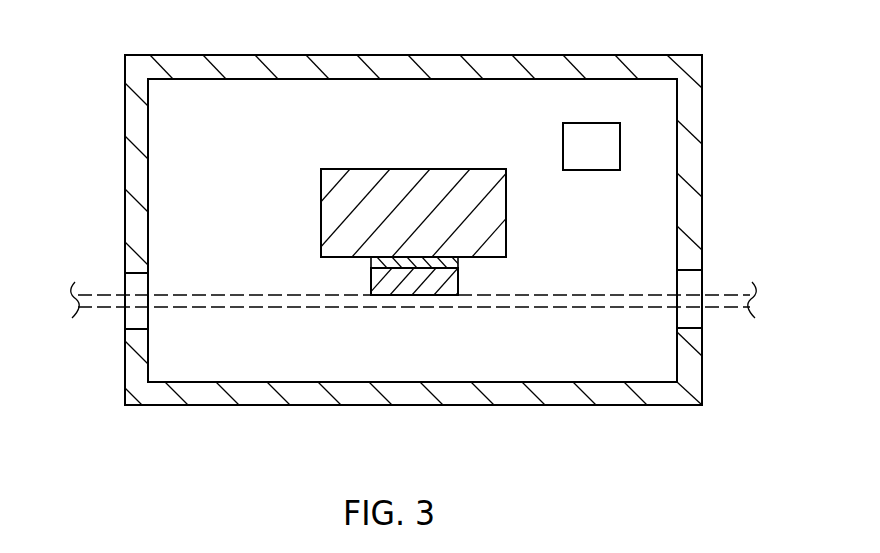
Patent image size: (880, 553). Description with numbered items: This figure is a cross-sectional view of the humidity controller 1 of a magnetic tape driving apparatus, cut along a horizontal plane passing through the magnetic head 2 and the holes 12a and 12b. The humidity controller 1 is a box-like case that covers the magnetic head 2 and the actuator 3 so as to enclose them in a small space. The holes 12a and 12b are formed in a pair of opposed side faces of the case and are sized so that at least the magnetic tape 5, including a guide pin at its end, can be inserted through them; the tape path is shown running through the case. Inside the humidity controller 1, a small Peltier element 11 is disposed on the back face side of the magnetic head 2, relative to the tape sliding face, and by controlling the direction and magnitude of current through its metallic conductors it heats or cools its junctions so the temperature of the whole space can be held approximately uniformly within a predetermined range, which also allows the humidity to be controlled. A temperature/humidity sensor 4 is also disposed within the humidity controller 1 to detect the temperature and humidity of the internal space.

The humidity controller 1 is at (690, 160).
The magnetic head 2 is at (408, 285).
The actuator 3 is at (493, 247).
The temperature/humidity sensor 4 is at (596, 130).
The magnetic tape 5 is at (730, 307).
The Peltier element 11 is at (372, 262).
The hole 12a is at (132, 283).
The hole 12b is at (695, 282).